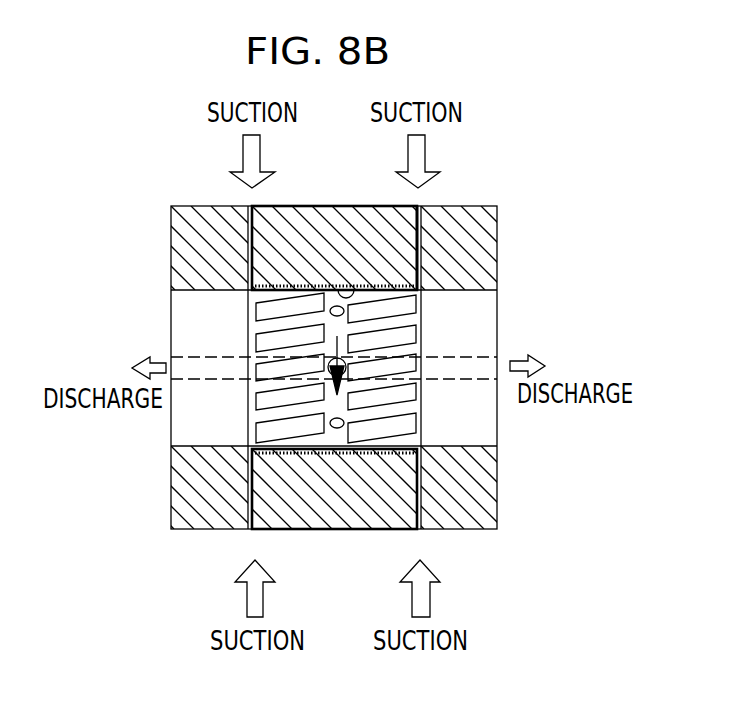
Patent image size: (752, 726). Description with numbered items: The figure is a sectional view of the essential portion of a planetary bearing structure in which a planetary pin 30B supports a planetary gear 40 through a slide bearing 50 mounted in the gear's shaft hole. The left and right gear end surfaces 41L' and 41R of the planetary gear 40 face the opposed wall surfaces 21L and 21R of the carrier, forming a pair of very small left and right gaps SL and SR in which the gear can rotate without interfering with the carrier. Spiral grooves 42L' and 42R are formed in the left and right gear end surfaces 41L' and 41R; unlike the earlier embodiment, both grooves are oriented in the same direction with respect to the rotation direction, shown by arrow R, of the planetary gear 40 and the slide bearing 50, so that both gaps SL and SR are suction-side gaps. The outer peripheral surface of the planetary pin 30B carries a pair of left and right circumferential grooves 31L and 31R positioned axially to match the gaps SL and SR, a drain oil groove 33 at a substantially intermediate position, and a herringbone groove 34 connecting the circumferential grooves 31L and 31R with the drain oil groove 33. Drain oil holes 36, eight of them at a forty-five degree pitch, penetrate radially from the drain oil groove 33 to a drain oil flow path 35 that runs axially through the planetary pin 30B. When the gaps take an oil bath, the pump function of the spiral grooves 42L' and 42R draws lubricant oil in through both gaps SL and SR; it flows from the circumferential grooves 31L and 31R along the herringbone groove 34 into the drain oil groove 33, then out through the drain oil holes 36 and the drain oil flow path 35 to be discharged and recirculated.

The left gap SL is at (247, 205).
The right gap SR is at (418, 205).
The left opposed wall surface 21L is at (270, 205).
The right opposed wall surface 21R is at (398, 205).
The slide bearing 50 is at (350, 288).
The left gear end surface 41L' is at (199, 252).
The spiral groove 42L' is at (199, 252).
The right gear end surface 41R is at (480, 248).
The spiral groove 42R is at (421, 258).
The planetary pin 30B is at (500, 305).
The herringbone groove 34 is at (272, 300).
The drain oil groove 33 is at (327, 327).
The right circumferential groove 31R is at (416, 313).
The rotation direction arrow R is at (337, 347).
The left circumferential groove 31L is at (258, 402).
The drain oil hole 36 is at (330, 423).
The drain oil flow path 35 is at (462, 377).
The planetary gear 40 is at (340, 530).